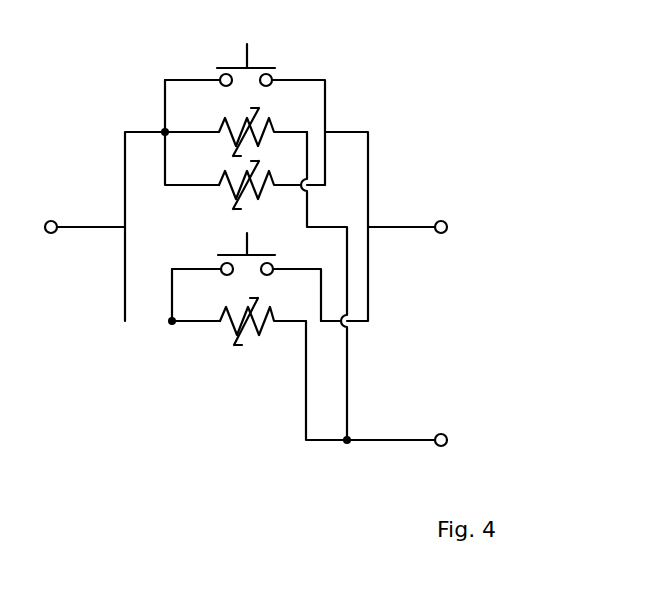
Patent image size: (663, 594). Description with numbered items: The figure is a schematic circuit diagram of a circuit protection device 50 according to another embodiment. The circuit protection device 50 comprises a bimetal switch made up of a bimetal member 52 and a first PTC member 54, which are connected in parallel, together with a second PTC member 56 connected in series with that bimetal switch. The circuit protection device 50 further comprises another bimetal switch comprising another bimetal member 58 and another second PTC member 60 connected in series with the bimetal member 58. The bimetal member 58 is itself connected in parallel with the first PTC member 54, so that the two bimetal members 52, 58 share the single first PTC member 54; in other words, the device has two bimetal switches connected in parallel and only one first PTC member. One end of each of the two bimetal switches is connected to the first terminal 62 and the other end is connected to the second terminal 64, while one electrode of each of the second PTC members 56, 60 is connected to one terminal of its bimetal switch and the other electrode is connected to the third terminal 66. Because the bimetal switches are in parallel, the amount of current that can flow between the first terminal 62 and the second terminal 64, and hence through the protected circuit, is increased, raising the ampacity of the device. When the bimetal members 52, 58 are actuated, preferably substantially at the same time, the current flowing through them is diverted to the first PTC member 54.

The circuit protection device 50 is at (409, 293).
The bimetal member 52 is at (262, 66).
The first PTC member 54 is at (231, 193).
The second PTC member 56 is at (262, 126).
The bimetal member 58 is at (250, 241).
The second PTC member 60 is at (228, 327).
The first terminal 62 is at (51, 221).
The second terminal 64 is at (441, 221).
The third terminal 66 is at (441, 434).